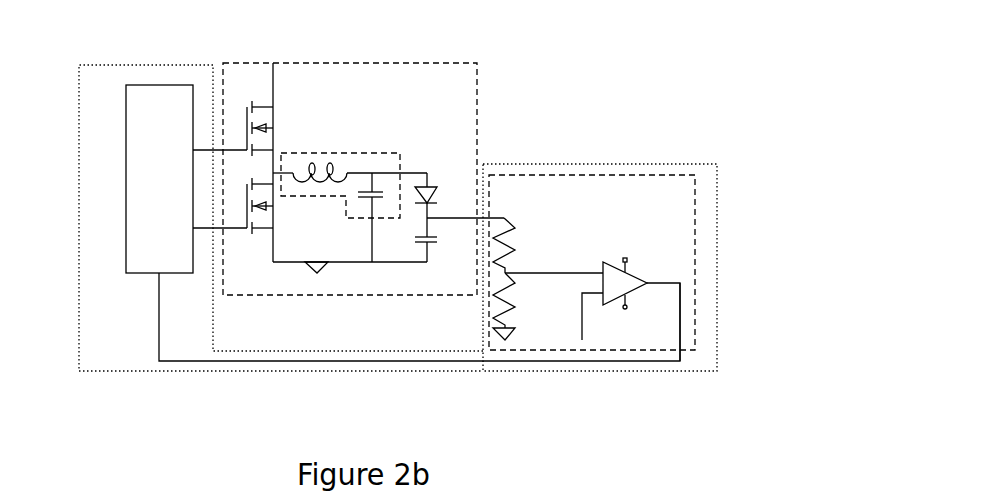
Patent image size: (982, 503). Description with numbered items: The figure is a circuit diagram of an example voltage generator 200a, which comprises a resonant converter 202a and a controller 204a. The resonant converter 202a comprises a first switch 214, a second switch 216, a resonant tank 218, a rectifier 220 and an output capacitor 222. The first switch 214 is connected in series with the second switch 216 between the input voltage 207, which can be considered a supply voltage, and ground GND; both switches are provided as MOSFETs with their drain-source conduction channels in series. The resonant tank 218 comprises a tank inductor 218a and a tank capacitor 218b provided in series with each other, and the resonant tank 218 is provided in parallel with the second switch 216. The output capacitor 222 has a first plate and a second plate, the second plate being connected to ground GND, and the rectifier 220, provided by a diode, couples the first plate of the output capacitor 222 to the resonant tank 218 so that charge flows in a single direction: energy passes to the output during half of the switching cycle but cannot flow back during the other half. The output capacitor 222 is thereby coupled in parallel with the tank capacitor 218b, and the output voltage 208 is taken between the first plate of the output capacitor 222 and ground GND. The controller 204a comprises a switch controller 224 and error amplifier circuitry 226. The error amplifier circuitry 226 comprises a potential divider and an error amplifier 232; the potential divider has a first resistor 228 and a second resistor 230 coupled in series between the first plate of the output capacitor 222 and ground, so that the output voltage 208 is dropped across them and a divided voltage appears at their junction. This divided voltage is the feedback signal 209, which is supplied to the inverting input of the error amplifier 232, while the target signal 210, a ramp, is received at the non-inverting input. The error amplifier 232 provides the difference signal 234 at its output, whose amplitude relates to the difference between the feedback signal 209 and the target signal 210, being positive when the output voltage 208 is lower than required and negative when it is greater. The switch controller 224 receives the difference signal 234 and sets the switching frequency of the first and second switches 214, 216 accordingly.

The voltage generator 200a is at (673, 60).
The resonant converter 202a is at (237, 63).
The controller 204a is at (698, 164).
The input voltage 207 is at (273, 87).
The output voltage 208 is at (504, 218).
The feedback signal 209 is at (563, 273).
The target signal 210 is at (586, 295).
The first switch 214 is at (247, 120).
The second switch 216 is at (252, 226).
The resonant tank 218 is at (400, 180).
The tank inductor 218a is at (313, 168).
The tank capacitor 218b is at (380, 192).
The rectifier 220 is at (437, 197).
The output capacitor 222 is at (437, 242).
The switch controller 224 is at (127, 85).
The error amplifier circuitry 226 is at (622, 175).
The first resistor 228 is at (512, 252).
The second resistor 230 is at (513, 308).
The error amplifier 232 is at (632, 268).
The difference signal 234 is at (682, 295).
The ground GND is at (317, 273).